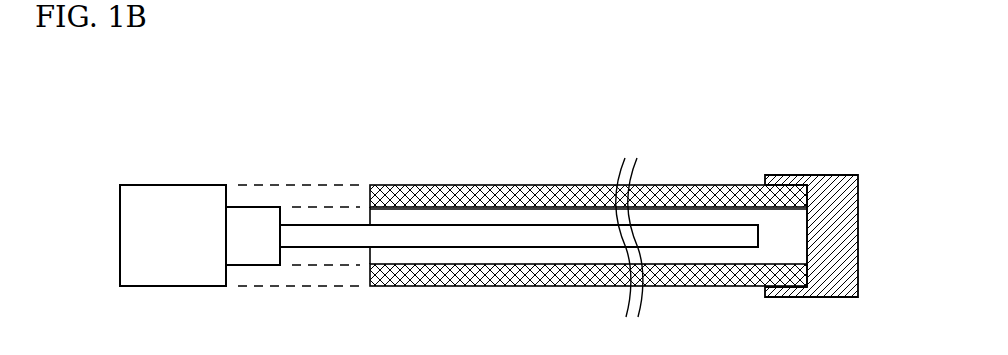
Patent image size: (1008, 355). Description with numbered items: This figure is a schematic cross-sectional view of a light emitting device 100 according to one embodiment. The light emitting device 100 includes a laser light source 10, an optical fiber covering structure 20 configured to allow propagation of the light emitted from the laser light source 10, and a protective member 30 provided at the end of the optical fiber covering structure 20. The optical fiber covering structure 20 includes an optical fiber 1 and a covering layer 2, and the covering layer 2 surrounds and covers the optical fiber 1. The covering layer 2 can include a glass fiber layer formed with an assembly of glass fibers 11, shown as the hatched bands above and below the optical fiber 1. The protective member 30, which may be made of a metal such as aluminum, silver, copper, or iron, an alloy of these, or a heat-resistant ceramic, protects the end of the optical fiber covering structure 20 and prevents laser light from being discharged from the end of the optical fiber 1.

The light emitting device 100 is at (745, 98).
The laser light source 10 is at (178, 198).
The optical fiber covering structure 20 is at (665, 173).
The glass fibers 11 is at (410, 184).
The covering layer 2 is at (557, 288).
The optical fiber 1 is at (570, 232).
The protective member 30 is at (820, 177).